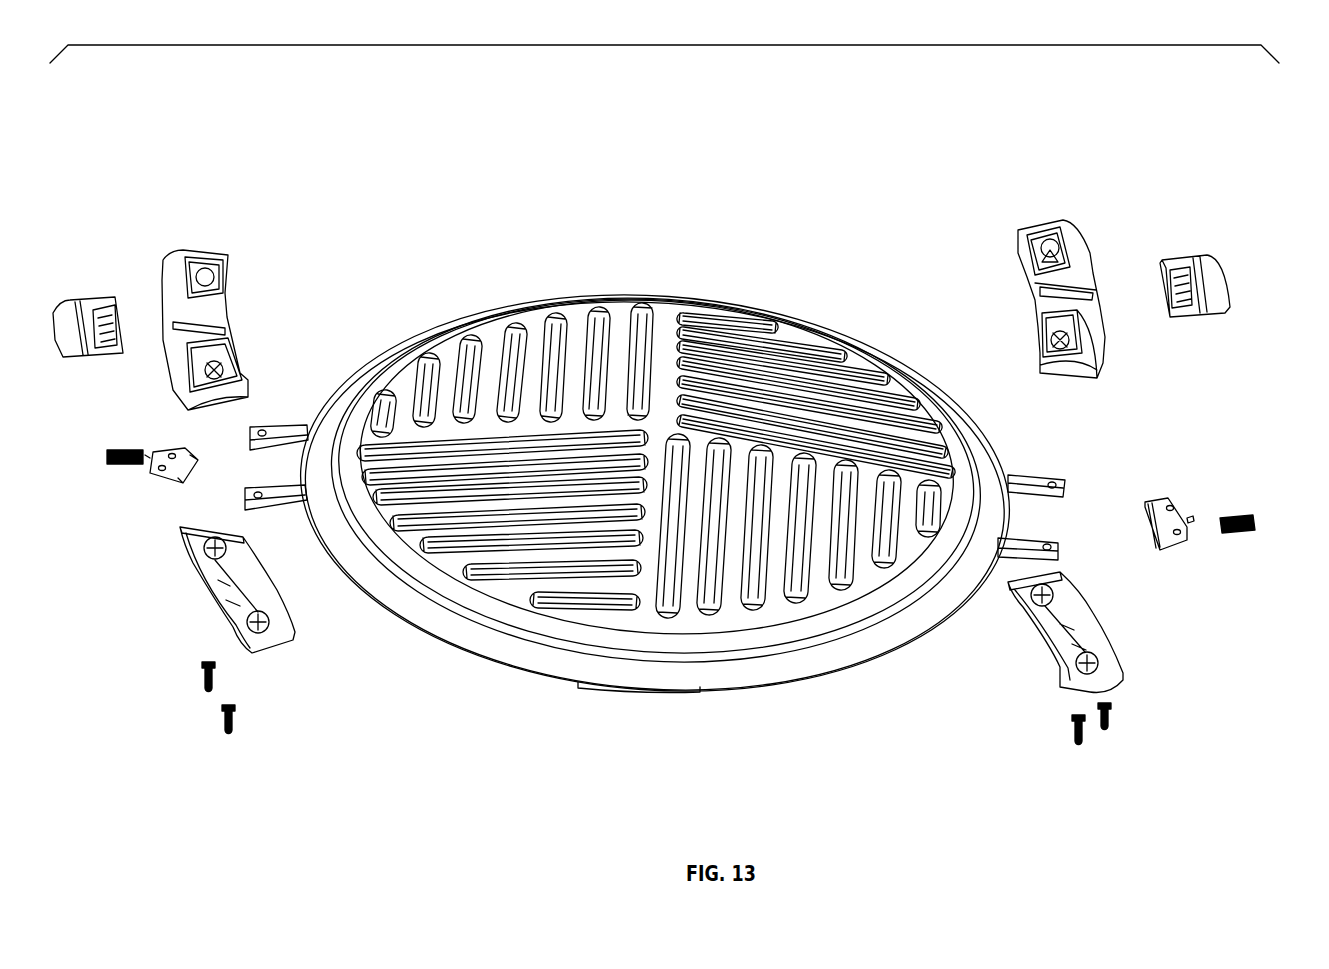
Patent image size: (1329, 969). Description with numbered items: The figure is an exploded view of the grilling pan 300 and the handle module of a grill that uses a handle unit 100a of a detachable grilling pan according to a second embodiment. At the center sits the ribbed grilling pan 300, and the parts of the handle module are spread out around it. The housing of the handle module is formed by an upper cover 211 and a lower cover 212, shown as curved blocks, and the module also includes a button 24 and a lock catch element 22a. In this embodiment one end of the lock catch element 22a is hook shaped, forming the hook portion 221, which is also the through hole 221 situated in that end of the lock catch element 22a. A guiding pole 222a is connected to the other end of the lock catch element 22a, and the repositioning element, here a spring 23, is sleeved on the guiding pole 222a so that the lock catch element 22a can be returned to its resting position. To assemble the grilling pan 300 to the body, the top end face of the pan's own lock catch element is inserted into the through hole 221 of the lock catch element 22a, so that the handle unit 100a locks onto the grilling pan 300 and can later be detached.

The grilling pan 300 is at (716, 310).
The handle unit 100a is at (1080, 229).
The upper cover 211 is at (1035, 245).
The button 24 is at (1220, 276).
The hook portion 221 is at (1148, 497).
The lock catch element 22a is at (1173, 504).
The guiding pole 222a is at (1190, 528).
The spring 23 is at (1250, 516).
The lower cover 212 is at (1045, 636).